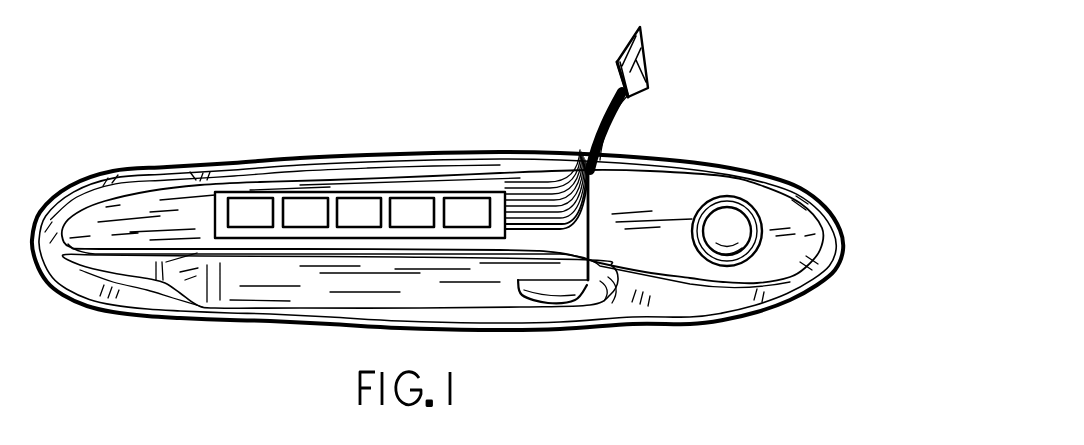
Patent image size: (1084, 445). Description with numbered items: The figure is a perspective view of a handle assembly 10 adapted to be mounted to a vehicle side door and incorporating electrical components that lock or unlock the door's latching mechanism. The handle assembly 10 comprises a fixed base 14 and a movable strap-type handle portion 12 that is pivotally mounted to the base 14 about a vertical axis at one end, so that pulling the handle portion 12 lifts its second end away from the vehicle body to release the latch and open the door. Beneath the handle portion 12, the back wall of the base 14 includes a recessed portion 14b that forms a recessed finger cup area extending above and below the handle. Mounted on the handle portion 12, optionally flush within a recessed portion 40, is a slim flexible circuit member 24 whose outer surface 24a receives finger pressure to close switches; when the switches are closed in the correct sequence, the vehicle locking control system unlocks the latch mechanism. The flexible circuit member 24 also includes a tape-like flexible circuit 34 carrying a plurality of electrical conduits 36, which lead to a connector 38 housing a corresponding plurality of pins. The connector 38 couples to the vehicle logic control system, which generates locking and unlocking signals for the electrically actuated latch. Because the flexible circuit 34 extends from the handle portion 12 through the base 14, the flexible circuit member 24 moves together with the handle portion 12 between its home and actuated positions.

The handle assembly 10 is at (756, 170).
The handle portion 12 is at (184, 216).
The base 14 is at (590, 300).
The recessed portion 14b is at (277, 272).
The flexible circuit member 24 is at (297, 192).
The outer surface 24a is at (381, 195).
The flexible circuit 34 is at (612, 129).
The electrical conduits 36 is at (538, 212).
The connector 38 is at (644, 52).
The recessed portion 40 is at (237, 200).